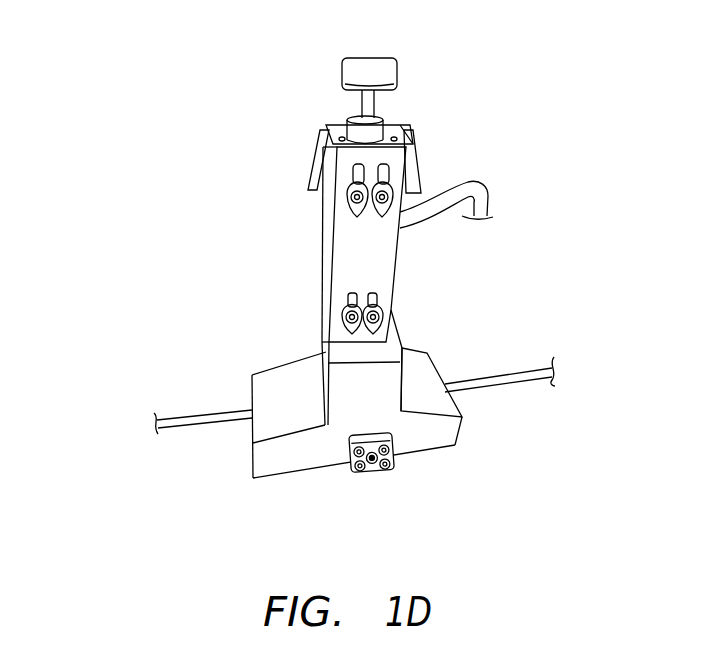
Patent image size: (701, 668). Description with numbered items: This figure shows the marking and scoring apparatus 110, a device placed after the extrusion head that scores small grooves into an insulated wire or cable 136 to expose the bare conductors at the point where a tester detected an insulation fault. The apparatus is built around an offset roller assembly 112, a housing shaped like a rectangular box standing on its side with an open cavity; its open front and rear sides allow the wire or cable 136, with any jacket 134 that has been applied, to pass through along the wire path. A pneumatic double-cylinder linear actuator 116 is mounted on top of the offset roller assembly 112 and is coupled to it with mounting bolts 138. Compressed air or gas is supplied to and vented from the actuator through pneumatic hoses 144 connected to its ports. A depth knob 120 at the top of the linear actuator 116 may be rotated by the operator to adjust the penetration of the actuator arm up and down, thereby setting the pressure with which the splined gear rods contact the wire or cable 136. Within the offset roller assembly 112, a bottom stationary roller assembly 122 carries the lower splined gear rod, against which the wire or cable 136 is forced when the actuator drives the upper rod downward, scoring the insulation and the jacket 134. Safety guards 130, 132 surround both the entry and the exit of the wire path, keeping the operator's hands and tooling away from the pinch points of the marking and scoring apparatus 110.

The marking and scoring apparatus 110 is at (566, 97).
The depth knob 120 is at (360, 78).
The linear actuator 116 is at (333, 237).
The mounting bolts 138 is at (340, 192).
The pneumatic hoses 144 is at (493, 194).
The offset roller assembly 112 is at (323, 386).
The safety guard 132 is at (426, 396).
The safety guard 130 is at (272, 461).
The jacket 134 is at (497, 375).
The wire or cable 136 is at (563, 370).
The bottom stationary roller assembly 122 is at (377, 471).